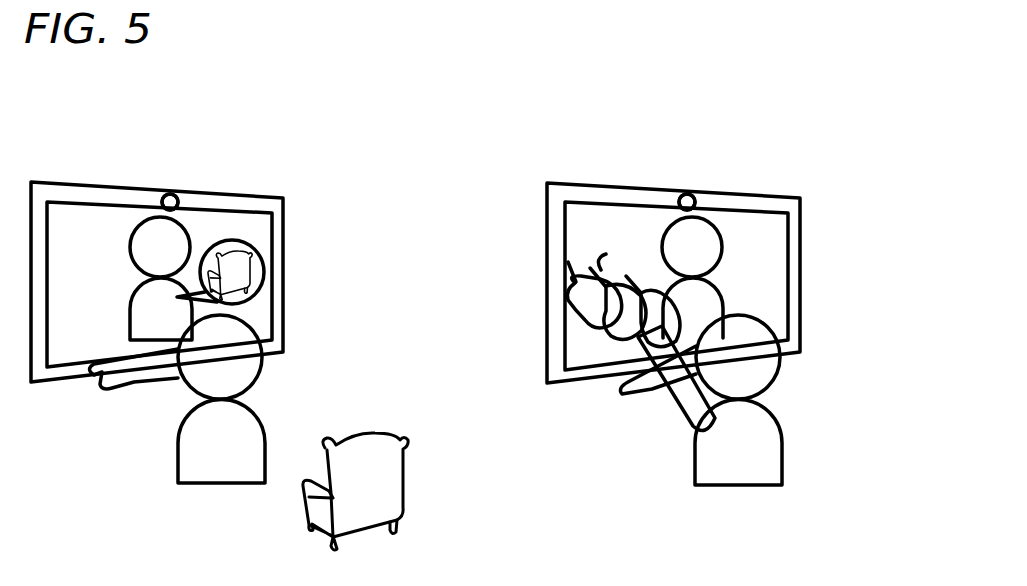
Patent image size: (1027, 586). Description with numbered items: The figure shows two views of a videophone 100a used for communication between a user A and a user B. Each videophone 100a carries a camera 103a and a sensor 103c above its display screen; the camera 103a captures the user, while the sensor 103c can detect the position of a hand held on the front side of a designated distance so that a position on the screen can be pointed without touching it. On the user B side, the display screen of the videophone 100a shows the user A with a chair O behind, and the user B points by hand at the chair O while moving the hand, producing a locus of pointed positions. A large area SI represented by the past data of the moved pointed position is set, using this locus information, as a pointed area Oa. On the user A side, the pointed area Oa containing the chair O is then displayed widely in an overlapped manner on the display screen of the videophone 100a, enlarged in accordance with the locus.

The videophone 100a is at (107, 186).
The camera 103a is at (186, 196).
The sensor 103c is at (522, 175).
The user A is at (263, 426).
The user B is at (782, 437).
The pointed area Oa is at (264, 296).
The chair O is at (404, 509).
The large area SI is at (577, 352).